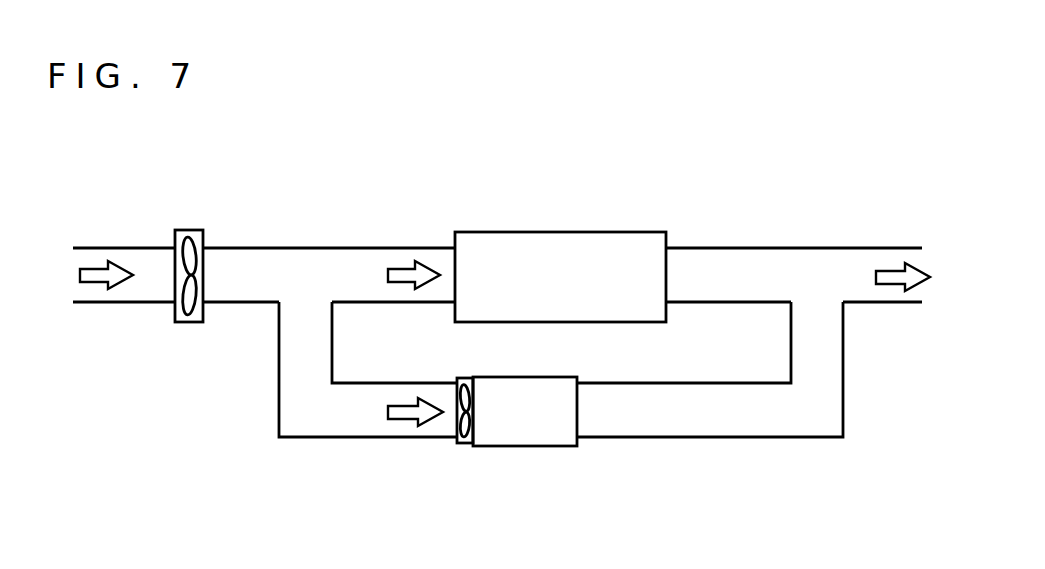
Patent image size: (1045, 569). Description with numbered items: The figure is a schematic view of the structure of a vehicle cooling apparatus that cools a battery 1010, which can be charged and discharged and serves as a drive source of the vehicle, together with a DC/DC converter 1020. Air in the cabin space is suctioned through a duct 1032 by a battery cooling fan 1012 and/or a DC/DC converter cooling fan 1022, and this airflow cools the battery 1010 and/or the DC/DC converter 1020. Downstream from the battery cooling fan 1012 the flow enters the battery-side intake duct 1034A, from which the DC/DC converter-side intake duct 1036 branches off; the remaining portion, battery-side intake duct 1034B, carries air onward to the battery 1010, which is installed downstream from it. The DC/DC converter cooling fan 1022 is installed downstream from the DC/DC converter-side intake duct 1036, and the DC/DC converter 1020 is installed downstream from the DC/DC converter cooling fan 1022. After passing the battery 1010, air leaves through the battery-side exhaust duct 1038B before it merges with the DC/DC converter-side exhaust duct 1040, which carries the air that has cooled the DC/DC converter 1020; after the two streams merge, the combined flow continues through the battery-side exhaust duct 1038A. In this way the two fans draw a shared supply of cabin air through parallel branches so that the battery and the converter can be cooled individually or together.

The battery 1010 is at (555, 232).
The battery cooling fan 1012 is at (187, 228).
The DC/DC converter 1020 is at (527, 446).
The DC/DC converter cooling fan 1022 is at (461, 447).
The duct 1032 is at (102, 248).
The battery-side intake duct 1034A is at (248, 265).
The battery-side intake duct 1034B is at (375, 265).
The DC/DC converter-side intake duct 1036 is at (357, 422).
The battery-side exhaust duct 1038A is at (857, 267).
The battery-side exhaust duct 1038B is at (732, 267).
The DC/DC converter-side exhaust duct 1040 is at (687, 423).